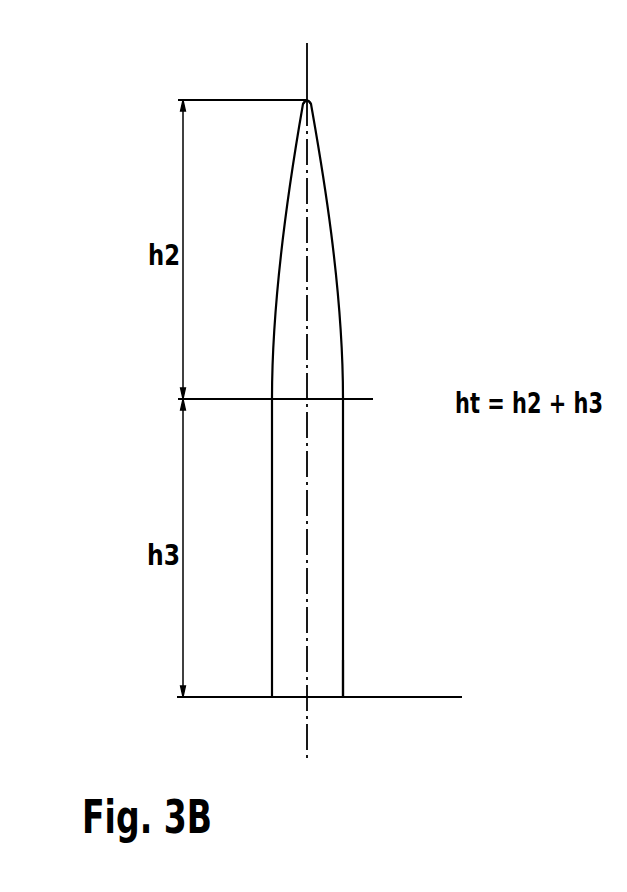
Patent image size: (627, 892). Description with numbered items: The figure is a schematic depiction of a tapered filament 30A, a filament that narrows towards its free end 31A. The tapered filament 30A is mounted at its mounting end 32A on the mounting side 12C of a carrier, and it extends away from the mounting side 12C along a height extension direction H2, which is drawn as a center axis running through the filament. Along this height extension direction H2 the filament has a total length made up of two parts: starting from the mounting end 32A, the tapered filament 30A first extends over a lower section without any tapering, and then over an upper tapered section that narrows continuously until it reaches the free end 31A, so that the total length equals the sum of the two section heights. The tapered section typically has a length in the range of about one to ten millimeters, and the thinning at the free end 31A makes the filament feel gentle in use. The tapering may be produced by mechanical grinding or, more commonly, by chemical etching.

The tapered filament 30A is at (413, 224).
The free end 31A is at (314, 102).
The mounting end 32A is at (352, 688).
The mounting side 12C is at (427, 682).
The height extension direction H2 is at (305, 67).